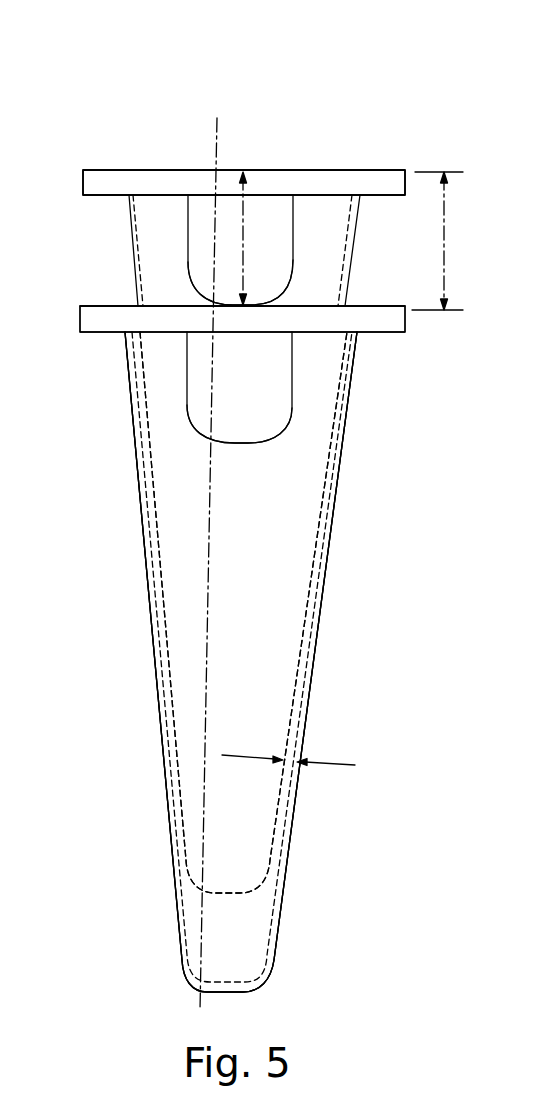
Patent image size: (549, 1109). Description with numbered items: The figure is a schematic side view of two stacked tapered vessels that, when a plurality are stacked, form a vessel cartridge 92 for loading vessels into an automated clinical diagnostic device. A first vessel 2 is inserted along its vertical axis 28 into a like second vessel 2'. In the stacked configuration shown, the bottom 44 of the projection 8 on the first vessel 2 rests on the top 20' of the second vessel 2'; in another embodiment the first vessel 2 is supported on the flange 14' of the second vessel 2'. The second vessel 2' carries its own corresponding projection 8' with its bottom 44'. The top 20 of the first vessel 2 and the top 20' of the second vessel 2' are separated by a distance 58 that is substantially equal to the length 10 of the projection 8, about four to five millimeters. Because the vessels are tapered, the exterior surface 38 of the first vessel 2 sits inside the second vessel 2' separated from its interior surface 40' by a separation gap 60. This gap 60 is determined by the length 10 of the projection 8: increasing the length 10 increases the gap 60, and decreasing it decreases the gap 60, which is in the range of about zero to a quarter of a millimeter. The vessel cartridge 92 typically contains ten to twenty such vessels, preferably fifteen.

The vessel cartridge 92 is at (278, 81).
The vessel 2 is at (252, 494).
The second vessel 2' is at (217, 618).
The projection 8 is at (184, 250).
The projection 8' is at (182, 387).
The length of the projection 10 is at (244, 250).
The flange 14' is at (238, 275).
The top 20 is at (244, 160).
The top 20' is at (242, 295).
The vertical axis 28 is at (220, 130).
The exterior surface 38 is at (354, 241).
The interior surface 40' is at (263, 662).
The bottom of the projection 44 is at (240, 307).
The bottom of the projection 44' is at (239, 452).
The distance 58 is at (445, 250).
The separation gap 60 is at (335, 763).